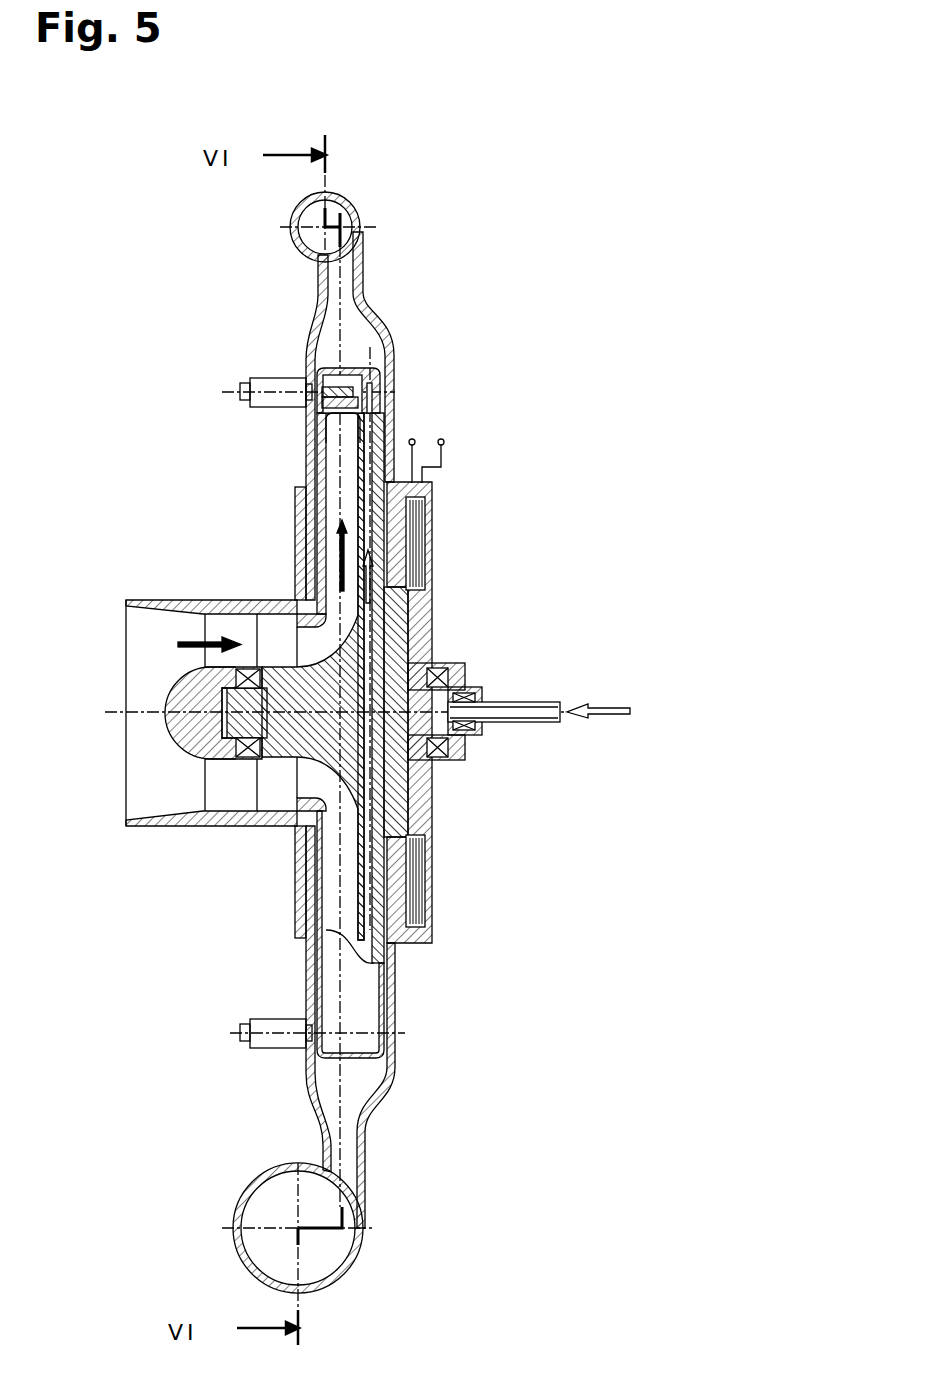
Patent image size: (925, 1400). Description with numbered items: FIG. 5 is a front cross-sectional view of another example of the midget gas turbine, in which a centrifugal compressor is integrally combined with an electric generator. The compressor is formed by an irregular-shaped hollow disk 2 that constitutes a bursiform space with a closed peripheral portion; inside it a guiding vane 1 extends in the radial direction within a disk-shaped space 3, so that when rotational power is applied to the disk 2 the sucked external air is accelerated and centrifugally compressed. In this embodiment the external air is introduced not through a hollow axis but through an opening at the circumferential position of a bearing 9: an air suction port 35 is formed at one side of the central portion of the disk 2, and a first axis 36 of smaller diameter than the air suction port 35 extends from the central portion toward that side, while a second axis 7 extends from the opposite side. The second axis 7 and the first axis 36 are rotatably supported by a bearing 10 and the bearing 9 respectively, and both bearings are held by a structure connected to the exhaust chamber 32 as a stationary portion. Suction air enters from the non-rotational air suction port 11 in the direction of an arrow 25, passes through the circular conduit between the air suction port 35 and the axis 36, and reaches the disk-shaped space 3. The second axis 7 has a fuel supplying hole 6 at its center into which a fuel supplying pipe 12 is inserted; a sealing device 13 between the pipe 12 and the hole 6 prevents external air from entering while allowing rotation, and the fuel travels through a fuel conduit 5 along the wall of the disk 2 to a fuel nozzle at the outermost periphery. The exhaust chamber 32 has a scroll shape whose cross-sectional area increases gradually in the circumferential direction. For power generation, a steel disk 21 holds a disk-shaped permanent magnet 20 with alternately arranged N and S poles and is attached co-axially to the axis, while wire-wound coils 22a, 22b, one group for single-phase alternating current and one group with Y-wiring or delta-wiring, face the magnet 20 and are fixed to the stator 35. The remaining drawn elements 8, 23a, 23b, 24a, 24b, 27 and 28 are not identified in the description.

The guiding vane 1 is at (327, 580).
The irregular-shaped hollow disk 2 is at (330, 535).
The disk-shaped space 3 is at (333, 430).
The fuel conduit 5 is at (372, 425).
The fuel supplying hole 6 is at (462, 690).
The second axis 7 is at (478, 690).
The return tube loop 8 is at (358, 1058).
The bearing 9 is at (205, 763).
The bearing 10 is at (450, 760).
The air suction port 11 is at (126, 752).
The fuel supplying pipe 12 is at (527, 712).
The sealing device 13 is at (453, 738).
The disk-shaped permanent magnet 20 is at (432, 843).
The steel disk 21 is at (432, 807).
The wire-wound coil 22a is at (569, 712).
The wire-wound coil 22b is at (433, 578).
The lead wire 23a is at (571, 414).
The lead wire 23b is at (415, 440).
The lead wire 24a is at (577, 434).
The lead wire 24b is at (444, 443).
The arrow 25 is at (192, 643).
The flow direction arrow 27 is at (598, 708).
The stator winding 28 is at (423, 560).
The exhaust chamber 32 is at (357, 208).
The stator 35 is at (433, 613).
The first axis 36 is at (238, 758).